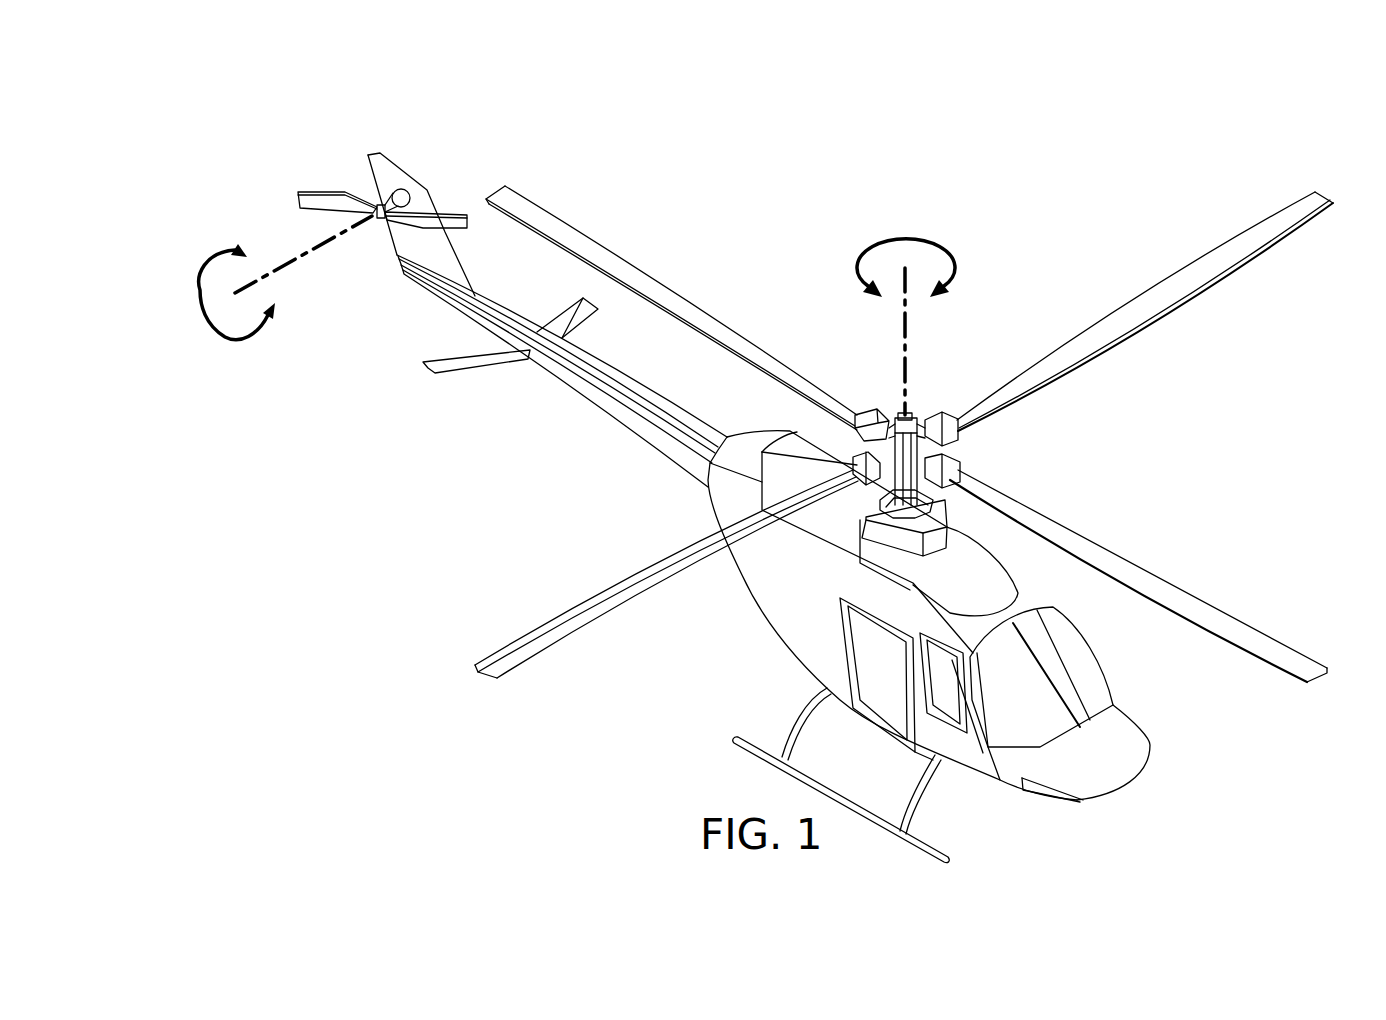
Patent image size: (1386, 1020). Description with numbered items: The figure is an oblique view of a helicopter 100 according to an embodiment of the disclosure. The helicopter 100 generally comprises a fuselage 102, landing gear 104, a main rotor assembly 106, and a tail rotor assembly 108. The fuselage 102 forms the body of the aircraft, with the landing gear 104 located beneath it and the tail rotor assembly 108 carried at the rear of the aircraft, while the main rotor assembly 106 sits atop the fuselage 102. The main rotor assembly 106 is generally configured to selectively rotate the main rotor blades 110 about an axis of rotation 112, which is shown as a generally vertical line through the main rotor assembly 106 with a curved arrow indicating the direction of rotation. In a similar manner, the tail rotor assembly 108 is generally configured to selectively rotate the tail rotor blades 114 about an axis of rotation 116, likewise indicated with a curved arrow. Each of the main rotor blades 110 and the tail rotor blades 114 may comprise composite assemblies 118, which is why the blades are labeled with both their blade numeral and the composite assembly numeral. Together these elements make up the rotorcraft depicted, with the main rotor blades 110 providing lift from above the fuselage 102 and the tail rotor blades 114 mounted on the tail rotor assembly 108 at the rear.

The helicopter 100 is at (864, 188).
The fuselage 102 is at (1152, 750).
The landing gear 104 is at (938, 853).
The main rotor assembly 106 is at (870, 380).
The tail rotor assembly 108 is at (340, 110).
The main rotor blades 110 is at (645, 272).
The axis of rotation 112 is at (907, 343).
The tail rotor blades 114 is at (322, 193).
The axis of rotation 116 is at (300, 258).
The composite assemblies 118 is at (904, 434).